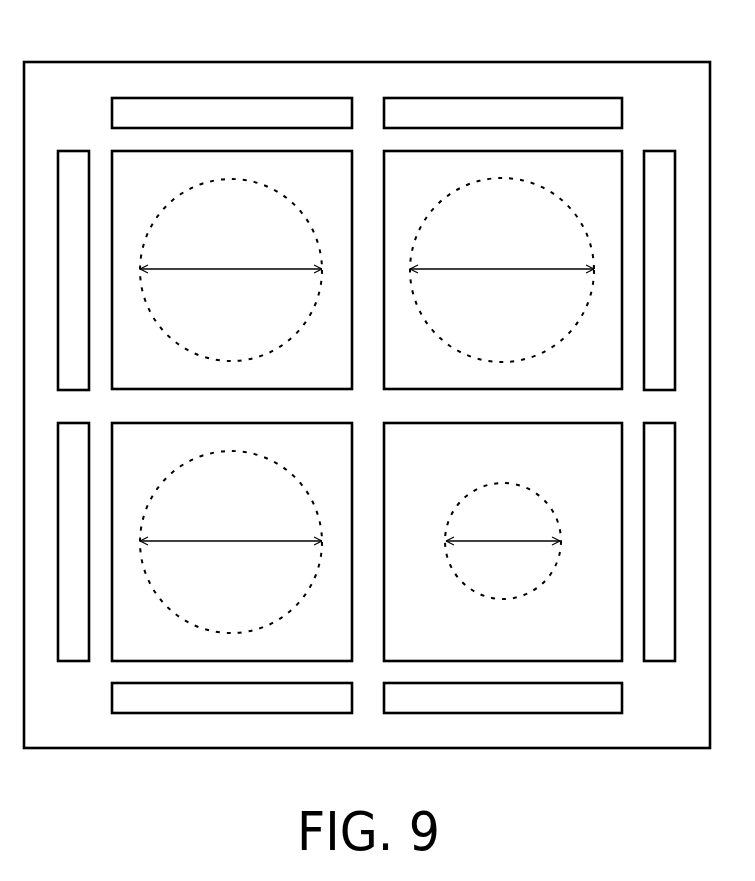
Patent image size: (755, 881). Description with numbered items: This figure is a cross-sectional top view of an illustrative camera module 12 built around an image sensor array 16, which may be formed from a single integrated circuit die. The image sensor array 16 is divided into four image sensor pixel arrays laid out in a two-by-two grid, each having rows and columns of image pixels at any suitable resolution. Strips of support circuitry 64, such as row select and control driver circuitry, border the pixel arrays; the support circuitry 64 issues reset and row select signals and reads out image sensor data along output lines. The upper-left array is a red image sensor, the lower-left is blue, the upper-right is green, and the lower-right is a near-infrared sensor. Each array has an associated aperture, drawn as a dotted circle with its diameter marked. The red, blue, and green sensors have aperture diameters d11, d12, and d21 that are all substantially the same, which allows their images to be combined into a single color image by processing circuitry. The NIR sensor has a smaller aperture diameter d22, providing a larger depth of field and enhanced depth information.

The camera module 12 is at (118, 44).
The image sensor array 16 is at (627, 70).
The support circuitry 64 is at (208, 104).
The aperture diameter d11 is at (228, 269).
The aperture diameter d21 is at (500, 269).
The aperture diameter d12 is at (228, 541).
The aperture diameter d22 is at (488, 540).